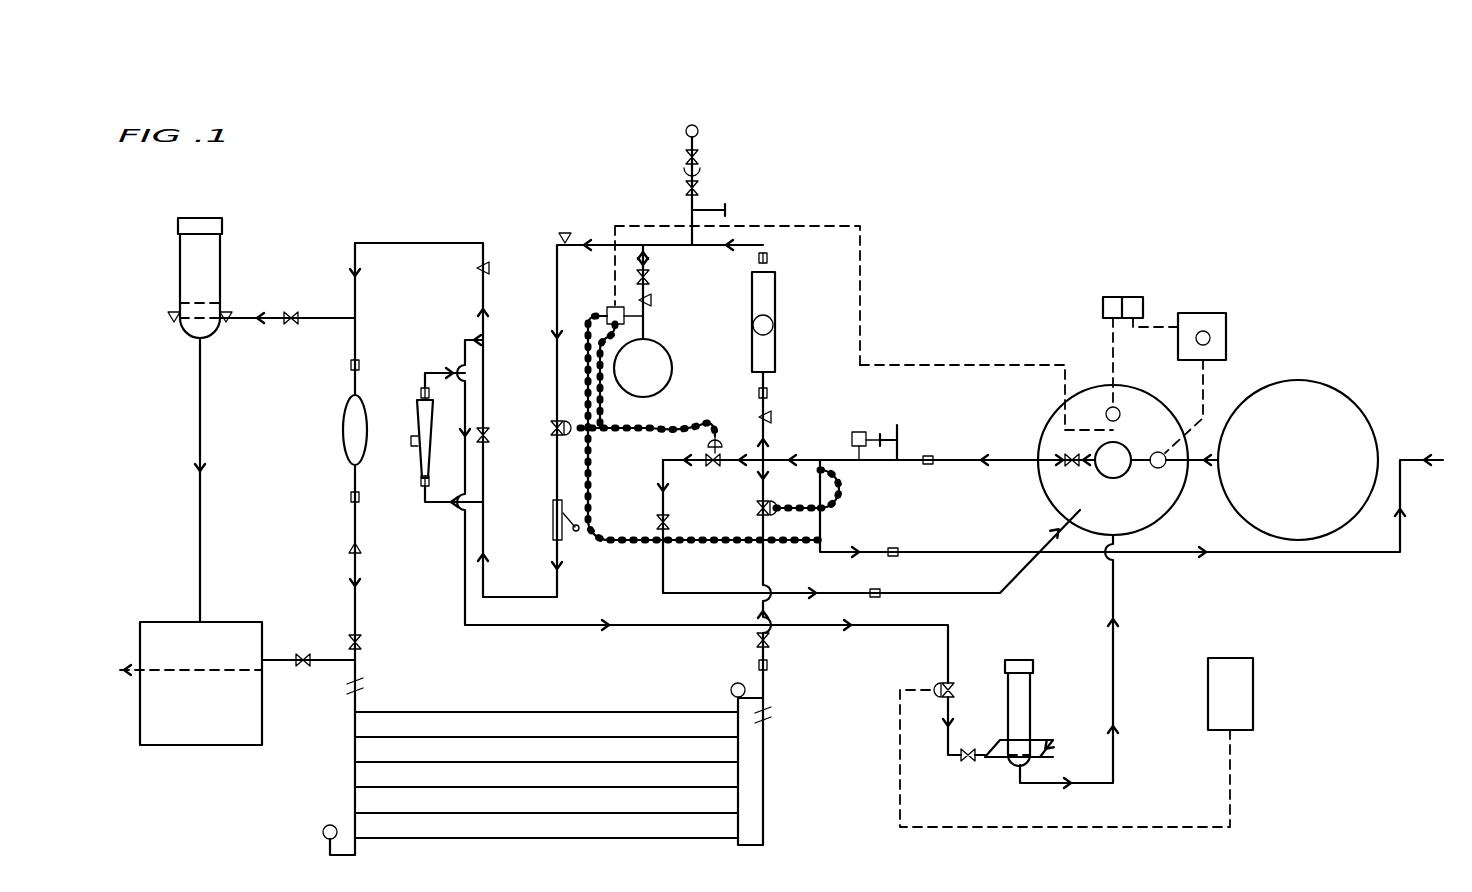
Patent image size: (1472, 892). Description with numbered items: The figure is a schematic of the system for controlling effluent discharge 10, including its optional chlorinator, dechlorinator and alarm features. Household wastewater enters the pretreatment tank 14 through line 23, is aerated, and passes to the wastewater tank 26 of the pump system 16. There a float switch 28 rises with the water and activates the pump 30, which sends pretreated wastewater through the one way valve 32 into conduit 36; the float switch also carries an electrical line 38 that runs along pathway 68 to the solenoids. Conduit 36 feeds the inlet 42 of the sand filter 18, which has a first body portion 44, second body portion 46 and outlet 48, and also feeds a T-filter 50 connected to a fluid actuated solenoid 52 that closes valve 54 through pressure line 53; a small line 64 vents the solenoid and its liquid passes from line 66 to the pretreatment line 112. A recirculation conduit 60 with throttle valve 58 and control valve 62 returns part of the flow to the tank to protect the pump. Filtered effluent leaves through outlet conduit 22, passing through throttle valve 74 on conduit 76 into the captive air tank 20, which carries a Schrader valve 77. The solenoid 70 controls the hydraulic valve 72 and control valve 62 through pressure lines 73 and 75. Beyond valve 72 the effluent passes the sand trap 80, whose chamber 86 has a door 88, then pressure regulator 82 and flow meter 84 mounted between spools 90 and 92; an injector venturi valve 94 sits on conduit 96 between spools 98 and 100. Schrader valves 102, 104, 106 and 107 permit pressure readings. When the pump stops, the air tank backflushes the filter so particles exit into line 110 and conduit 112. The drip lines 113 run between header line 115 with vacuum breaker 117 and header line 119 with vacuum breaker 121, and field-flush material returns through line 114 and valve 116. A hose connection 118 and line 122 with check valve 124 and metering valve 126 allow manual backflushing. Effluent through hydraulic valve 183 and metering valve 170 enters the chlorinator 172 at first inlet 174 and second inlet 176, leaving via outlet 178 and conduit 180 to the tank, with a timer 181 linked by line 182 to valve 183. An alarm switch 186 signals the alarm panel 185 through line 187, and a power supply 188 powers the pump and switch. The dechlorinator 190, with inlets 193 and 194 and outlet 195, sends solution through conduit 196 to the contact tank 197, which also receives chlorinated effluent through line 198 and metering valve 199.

The system for controlling effluent discharge 10 is at (1000, 270).
The wastewater inlet 14 is at (1352, 420).
The pump system 16 is at (1170, 505).
The filter 18 is at (776, 300).
The filtered water retaining chamber 20 is at (665, 372).
The outlet conduit 22 is at (352, 262).
The line 23 is at (1408, 458).
The wastewater tank 26 is at (1048, 490).
The float switch 28 is at (1120, 412).
The pump 30 is at (1118, 472).
The one way valve 32 is at (1075, 470).
The conduit 36 is at (978, 458).
The electrical line 38 is at (985, 365).
The inlet 42 is at (772, 330).
The first body portion 44 is at (755, 328).
The second body portion 46 is at (776, 365).
The outlet 48 is at (776, 260).
The T-filter 50 is at (900, 445).
The fluid actuated solenoid 52 is at (866, 432).
The pressure line 53 is at (825, 505).
The valve 54 is at (767, 505).
The throttle valve 58 is at (670, 522).
The conduit 60 is at (665, 587).
The control valve 62 is at (713, 468).
The small line 64 is at (858, 488).
The line 66 is at (590, 478).
The pathway 68 is at (862, 270).
The solenoid 70 is at (608, 307).
The solenoid-activated hydraulic valve 72 is at (555, 425).
The pressure line 73 is at (605, 400).
The throttle valve 74 is at (650, 277).
The pressure line 75 is at (705, 424).
The conduit 76 is at (650, 300).
The Schrader valve 77 is at (652, 306).
The sand trap 80 is at (553, 515).
The pressure regulator 82 is at (490, 438).
The flow meter 84 is at (345, 432).
The chamber 86 is at (590, 512).
The door 88 is at (577, 530).
The spool 90 is at (350, 500).
The spool 92 is at (350, 367).
The injector venturi valve 94 is at (422, 432).
The conduit 96 is at (424, 505).
The spool 98 is at (422, 390).
The spool 100 is at (420, 485).
The Schrader valve 102 is at (770, 418).
The Schrader valve 104 is at (560, 235).
The Schrader valve 106 is at (487, 272).
The Schrader valve 107 is at (360, 550).
The line 110 is at (768, 450).
The pretreatment line 112 is at (1295, 555).
The drip lines 113 is at (510, 712).
The line 114 is at (765, 800).
The header line 115 is at (352, 795).
The valve 116 is at (755, 640).
The vacuum breaker 117 is at (323, 830).
The hose connection 118 is at (686, 127).
The header line 119 is at (745, 775).
The vacuum breaker 121 is at (730, 690).
The line 122 is at (700, 136).
The check valve 124 is at (686, 160).
The metering valve 126 is at (700, 190).
The metering valve 170 is at (958, 765).
The chlorinator 172 is at (1025, 700).
The first inlet 174 is at (995, 765).
The second inlet 176 is at (1040, 758).
The outlet 178 is at (1025, 770).
The conduit 180 is at (545, 627).
The timer 181 is at (1253, 670).
The line 182 is at (1155, 828).
The hydraulic valve 183 is at (938, 688).
The high level alarm panel 185 is at (1226, 330).
The alarm switch 186 is at (1162, 470).
The line 187 is at (1210, 400).
The power supply 188 is at (1130, 297).
The dechlorinator 190 is at (178, 265).
The inlet 193 is at (226, 322).
The inlet 194 is at (180, 322).
The outlet 195 is at (195, 340).
The conduit 196 is at (197, 450).
The contact tank 197 is at (180, 748).
The line 198 is at (350, 645).
The metering valve 199 is at (350, 688).